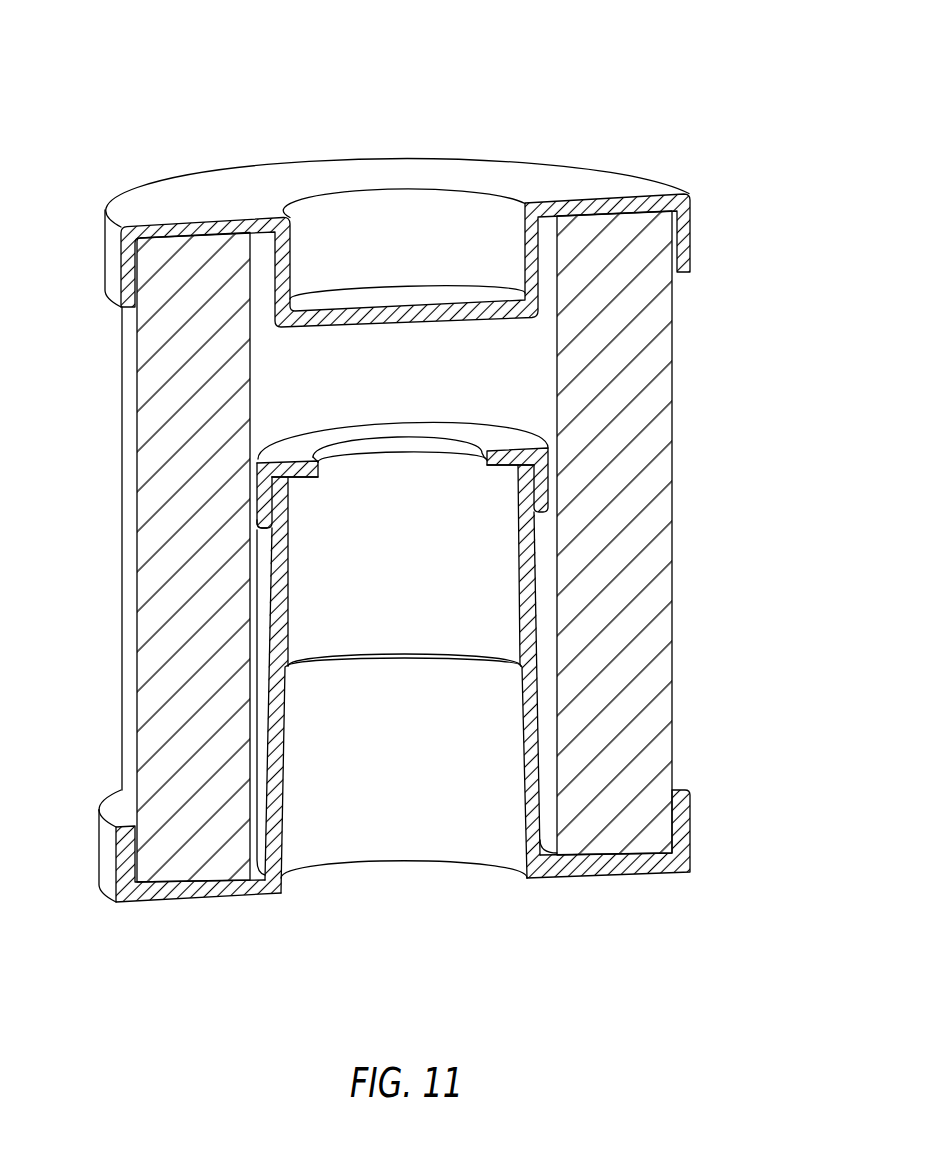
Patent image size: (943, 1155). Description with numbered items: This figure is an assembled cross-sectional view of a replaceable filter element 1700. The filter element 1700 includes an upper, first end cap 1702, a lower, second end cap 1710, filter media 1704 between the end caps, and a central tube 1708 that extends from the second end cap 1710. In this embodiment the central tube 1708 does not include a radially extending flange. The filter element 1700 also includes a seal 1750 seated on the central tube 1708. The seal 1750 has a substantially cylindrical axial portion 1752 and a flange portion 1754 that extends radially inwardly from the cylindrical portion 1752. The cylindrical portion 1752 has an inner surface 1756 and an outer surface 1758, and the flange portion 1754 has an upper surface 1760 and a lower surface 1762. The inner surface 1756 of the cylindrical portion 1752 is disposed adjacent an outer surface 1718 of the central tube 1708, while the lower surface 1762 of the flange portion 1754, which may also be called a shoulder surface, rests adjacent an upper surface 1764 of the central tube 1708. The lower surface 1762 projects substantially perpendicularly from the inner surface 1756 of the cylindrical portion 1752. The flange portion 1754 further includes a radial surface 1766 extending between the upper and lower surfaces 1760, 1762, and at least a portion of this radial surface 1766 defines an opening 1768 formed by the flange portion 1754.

The filter element 1700 is at (90, 62).
The first end cap 1702 is at (716, 206).
The filter media 1704 is at (716, 534).
The central tube 1708 is at (548, 720).
The second end cap 1710 is at (716, 851).
The outer surface of the central tube 1718 is at (538, 558).
The seal 1750 is at (355, 403).
The substantially cylindrical axial portion 1752 is at (243, 487).
The flange portion 1754 is at (243, 462).
The inner surface 1756 is at (272, 523).
The outer surface 1758 is at (258, 520).
The upper surface 1760 is at (271, 460).
The lower surface 1762 is at (300, 478).
The upper surface of the central tube 1764 is at (521, 466).
The radial surface 1766 is at (490, 443).
The opening 1768 is at (456, 432).